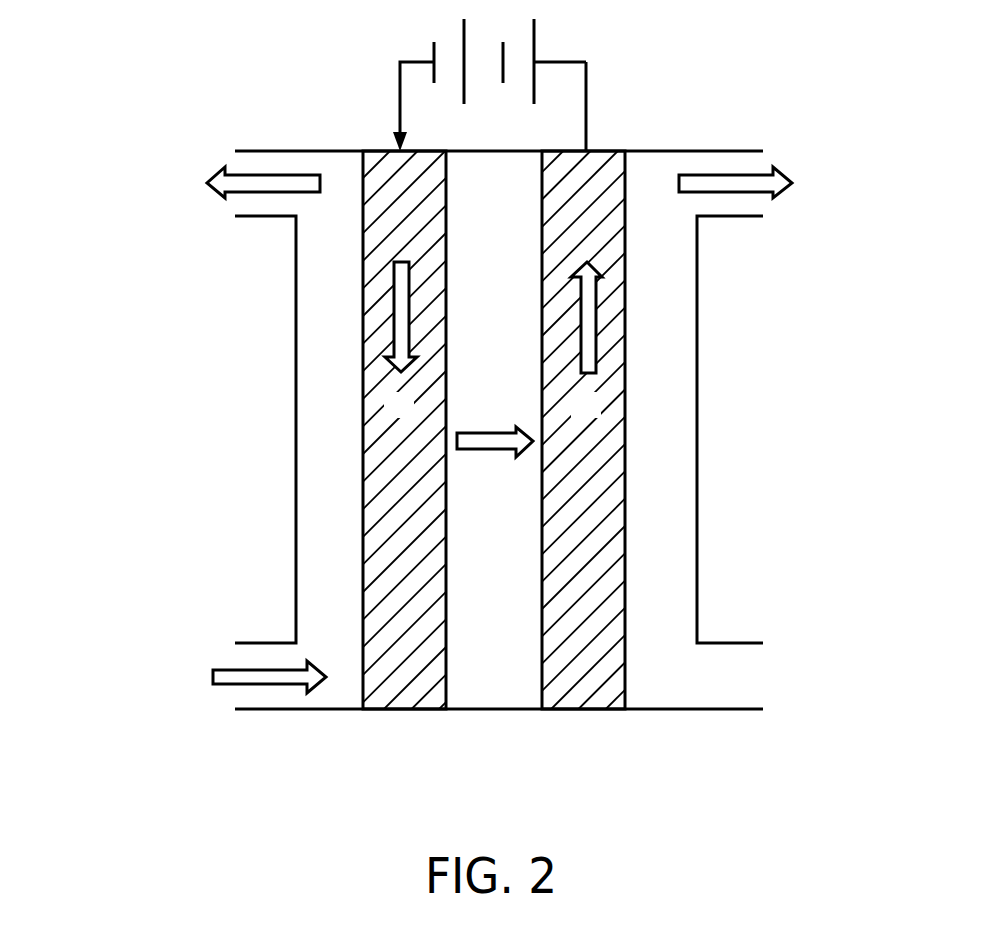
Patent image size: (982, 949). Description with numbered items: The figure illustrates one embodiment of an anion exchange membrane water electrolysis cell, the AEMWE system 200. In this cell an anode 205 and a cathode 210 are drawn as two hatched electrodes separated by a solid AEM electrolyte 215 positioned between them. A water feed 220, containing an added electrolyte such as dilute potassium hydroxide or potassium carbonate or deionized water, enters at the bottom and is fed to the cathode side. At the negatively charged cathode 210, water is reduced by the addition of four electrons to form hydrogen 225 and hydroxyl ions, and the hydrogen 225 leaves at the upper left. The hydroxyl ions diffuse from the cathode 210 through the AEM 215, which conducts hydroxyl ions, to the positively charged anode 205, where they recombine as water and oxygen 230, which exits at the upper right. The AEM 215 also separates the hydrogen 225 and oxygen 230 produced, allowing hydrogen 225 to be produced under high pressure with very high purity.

The AEMWE system 200 is at (150, 57).
The anode 205 is at (582, 709).
The cathode 210 is at (408, 709).
The solid AEM electrolyte 215 is at (498, 709).
The water feed 220 is at (222, 667).
The hydrogen 225 is at (222, 171).
The oxygen 230 is at (779, 171).